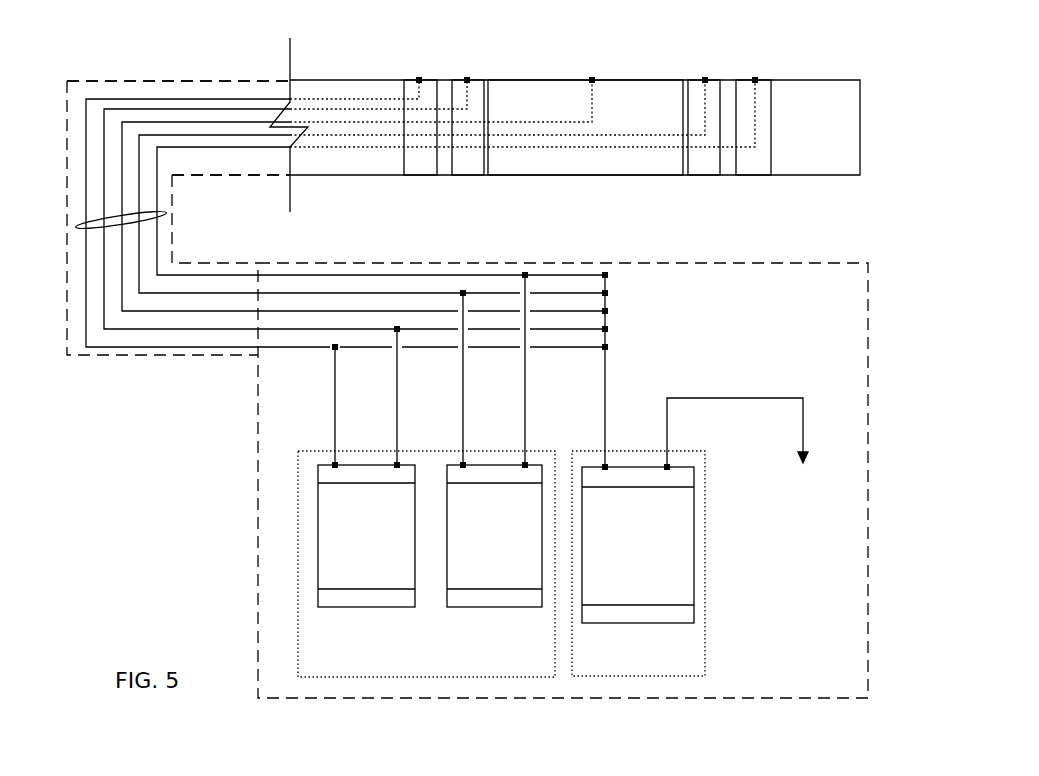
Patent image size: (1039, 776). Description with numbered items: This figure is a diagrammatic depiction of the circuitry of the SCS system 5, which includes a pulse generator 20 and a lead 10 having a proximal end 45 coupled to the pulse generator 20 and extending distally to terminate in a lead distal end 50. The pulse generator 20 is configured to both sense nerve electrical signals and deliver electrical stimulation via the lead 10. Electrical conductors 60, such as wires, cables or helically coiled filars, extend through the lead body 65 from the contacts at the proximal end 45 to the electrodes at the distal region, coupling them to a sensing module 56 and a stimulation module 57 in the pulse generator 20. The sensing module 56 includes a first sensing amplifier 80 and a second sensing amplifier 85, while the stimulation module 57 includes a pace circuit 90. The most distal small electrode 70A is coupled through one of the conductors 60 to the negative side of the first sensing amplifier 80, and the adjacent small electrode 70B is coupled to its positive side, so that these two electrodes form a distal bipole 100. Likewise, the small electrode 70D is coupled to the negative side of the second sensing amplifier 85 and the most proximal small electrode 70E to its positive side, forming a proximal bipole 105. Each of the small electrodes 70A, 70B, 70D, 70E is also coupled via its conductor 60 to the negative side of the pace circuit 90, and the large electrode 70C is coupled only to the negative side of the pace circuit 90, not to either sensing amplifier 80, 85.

The SCS system 5 is at (100, 434).
The lead 10 is at (375, 214).
The pulse generator 20 is at (258, 480).
The lead proximal end 45 is at (214, 378).
The lead distal end 50 is at (860, 115).
The sensing module 56 is at (298, 568).
The stimulation module 57 is at (638, 676).
The electrical conductors 60 is at (80, 228).
The lead body 65 is at (367, 80).
The most distal electrode of the small distal electrodes 70A is at (760, 175).
The most proximal electrode of the small distal electrodes 70B is at (694, 175).
The large electrode 70C is at (575, 175).
The most distal electrode of the small proximal electrodes 70D is at (452, 175).
The most proximal electrode of the small proximal electrodes 70E is at (404, 175).
The first sensing amplifier 80 is at (490, 607).
The second sensing amplifier 85 is at (318, 577).
The pace circuit 90 is at (694, 588).
The distal bipole 100 is at (771, 75).
The proximal bipole 105 is at (483, 75).